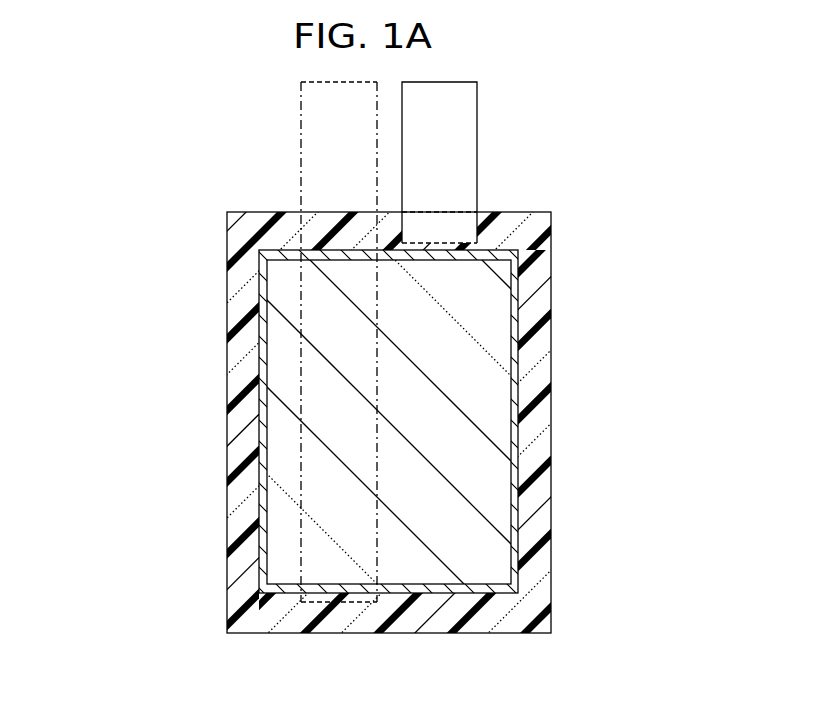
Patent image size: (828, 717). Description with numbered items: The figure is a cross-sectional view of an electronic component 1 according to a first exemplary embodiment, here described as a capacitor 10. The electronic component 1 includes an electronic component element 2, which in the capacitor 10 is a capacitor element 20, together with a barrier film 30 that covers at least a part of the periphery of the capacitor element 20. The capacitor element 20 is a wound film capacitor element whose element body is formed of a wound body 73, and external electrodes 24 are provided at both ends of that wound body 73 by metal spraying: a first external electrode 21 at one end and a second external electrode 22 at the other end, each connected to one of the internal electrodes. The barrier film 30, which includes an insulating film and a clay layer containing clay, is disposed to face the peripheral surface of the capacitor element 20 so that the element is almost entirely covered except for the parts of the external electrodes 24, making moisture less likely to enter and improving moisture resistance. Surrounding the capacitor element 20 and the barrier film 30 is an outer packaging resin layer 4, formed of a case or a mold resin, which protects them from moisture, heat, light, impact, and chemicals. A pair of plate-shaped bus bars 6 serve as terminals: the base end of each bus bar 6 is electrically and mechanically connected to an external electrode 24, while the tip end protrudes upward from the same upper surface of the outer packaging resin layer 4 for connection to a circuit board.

The electronic component 1 is at (207, 466).
The capacitor 10 is at (414, 358).
The electronic component element 2 is at (488, 502).
The capacitor element 20 is at (325, 358).
The outer packaging resin layer 4 is at (238, 356).
The bus bar 6 is at (318, 136).
The external electrode 24 is at (488, 252).
The first external electrode 21 is at (422, 216).
The second external electrode 22 is at (388, 631).
The barrier film 30 is at (513, 353).
The wound body 73 is at (498, 428).